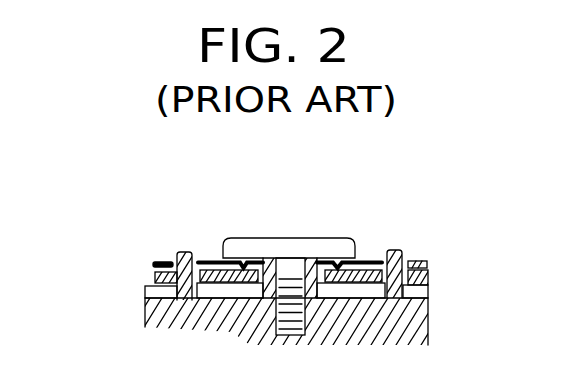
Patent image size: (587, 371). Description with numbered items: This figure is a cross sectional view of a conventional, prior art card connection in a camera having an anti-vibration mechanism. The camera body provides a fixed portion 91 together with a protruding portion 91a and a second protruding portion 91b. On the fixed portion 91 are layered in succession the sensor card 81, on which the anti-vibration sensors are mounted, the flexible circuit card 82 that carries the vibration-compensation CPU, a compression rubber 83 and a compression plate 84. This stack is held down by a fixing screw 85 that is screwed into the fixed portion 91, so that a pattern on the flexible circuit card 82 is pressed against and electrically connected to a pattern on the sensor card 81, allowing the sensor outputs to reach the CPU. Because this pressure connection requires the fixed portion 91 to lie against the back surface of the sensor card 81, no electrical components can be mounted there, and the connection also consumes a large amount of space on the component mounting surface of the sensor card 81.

The fixed portion 91 is at (148, 312).
The protruding portion 91a is at (277, 260).
The protruding portion 91b is at (190, 250).
The compression plate 84 is at (206, 258).
The fixing screw 85 is at (335, 238).
The compression rubber 83 is at (153, 274).
The sensor card 81 is at (150, 293).
The flexible circuit card 82 is at (428, 273).